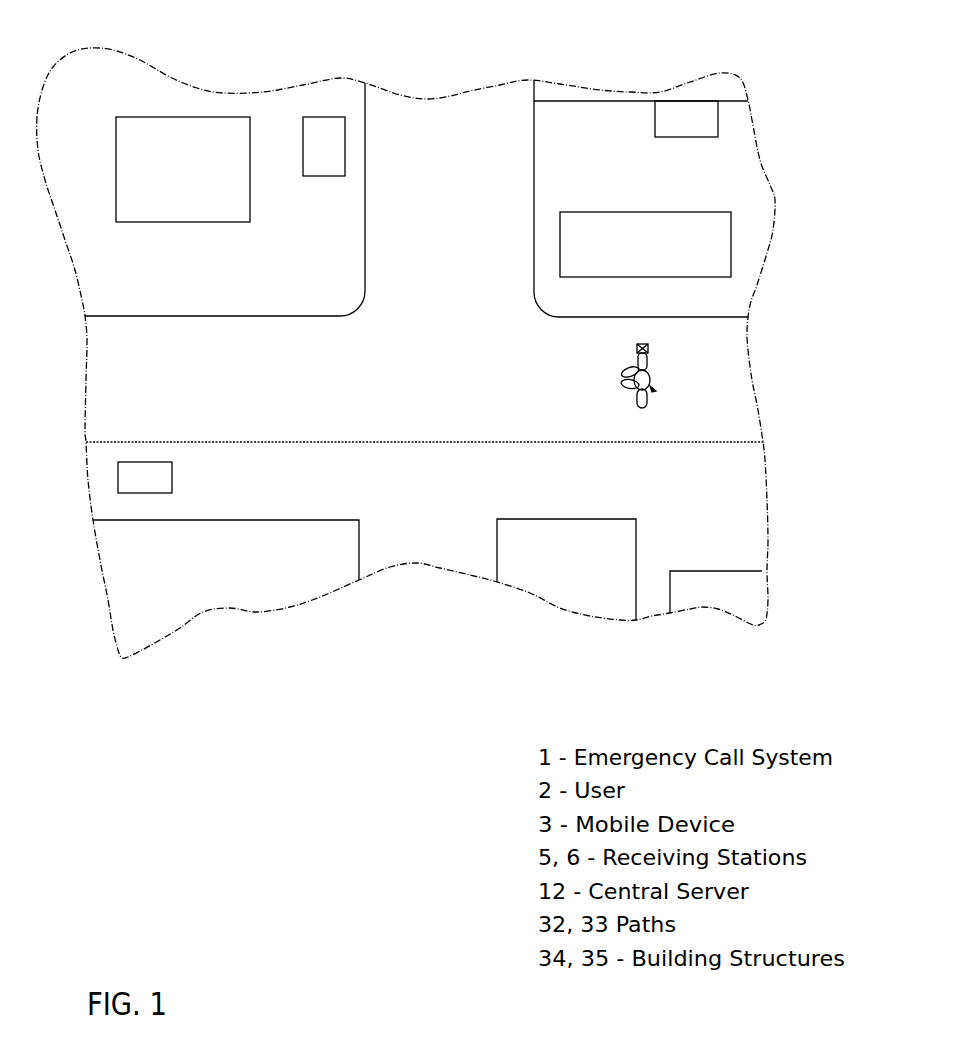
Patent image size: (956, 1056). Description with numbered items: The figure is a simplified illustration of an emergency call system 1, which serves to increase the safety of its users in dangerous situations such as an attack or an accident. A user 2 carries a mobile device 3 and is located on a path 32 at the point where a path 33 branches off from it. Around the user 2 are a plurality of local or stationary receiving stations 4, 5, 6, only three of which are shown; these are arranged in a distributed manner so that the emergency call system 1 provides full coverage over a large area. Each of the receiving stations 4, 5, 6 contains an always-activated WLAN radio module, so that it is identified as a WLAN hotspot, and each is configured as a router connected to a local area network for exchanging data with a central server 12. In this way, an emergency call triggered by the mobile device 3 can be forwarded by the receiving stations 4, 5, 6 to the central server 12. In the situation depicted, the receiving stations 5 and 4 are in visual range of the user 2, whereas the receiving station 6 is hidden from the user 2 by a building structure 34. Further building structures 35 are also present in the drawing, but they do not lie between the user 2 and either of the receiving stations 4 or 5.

The emergency call system 1 is at (446, 85).
The user 2 is at (655, 391).
The mobile device 3 is at (648, 346).
The receiving station 4 is at (172, 474).
The receiving station 5 is at (327, 168).
The receiving station 6 is at (686, 123).
The central server 12 is at (717, 598).
The path 32 is at (709, 400).
The path 33 is at (437, 181).
The building structure 34 is at (632, 255).
The building structures 35 is at (170, 181).